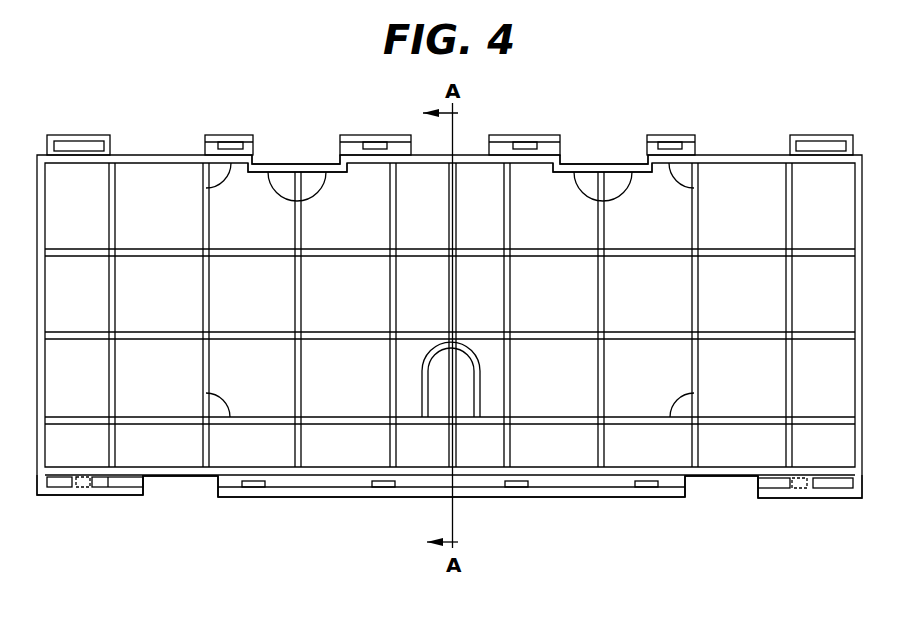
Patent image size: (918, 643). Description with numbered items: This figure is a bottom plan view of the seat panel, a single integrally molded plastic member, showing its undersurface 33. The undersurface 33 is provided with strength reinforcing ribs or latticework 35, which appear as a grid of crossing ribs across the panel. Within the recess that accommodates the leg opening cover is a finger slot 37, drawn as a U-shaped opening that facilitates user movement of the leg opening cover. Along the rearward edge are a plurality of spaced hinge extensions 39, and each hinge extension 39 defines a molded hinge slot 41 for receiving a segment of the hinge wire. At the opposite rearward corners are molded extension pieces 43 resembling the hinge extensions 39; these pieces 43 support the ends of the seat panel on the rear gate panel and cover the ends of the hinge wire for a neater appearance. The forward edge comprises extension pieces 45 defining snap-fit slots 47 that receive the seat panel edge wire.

The undersurface 33 is at (359, 310).
The strength reinforcing ribs or latticework 35 is at (527, 339).
The finger slot 37 is at (481, 377).
The hinge extension 39 is at (235, 134).
The molded hinge slot 41 is at (253, 153).
The molded extension piece 43 is at (82, 134).
The extension piece 45 is at (92, 496).
The snap-fit slot 47 is at (145, 488).